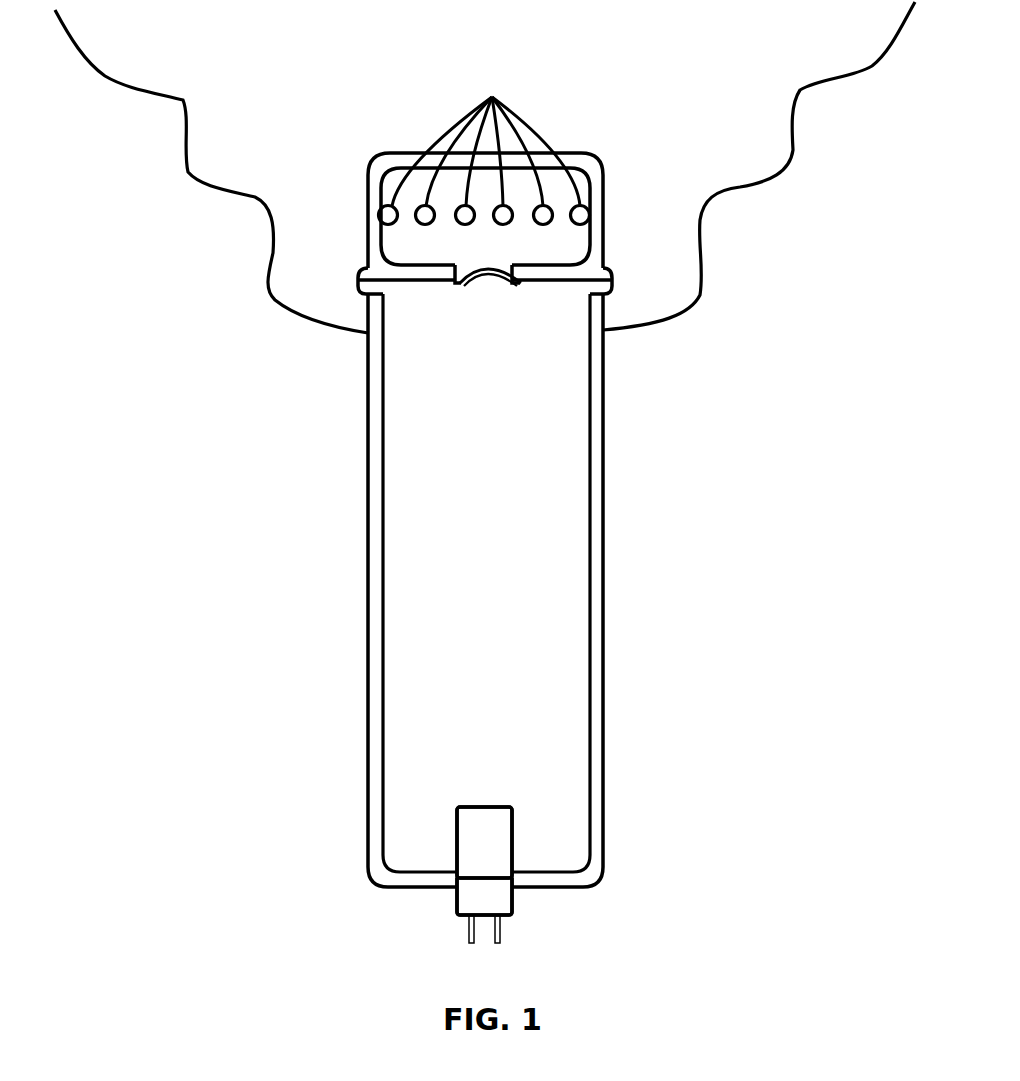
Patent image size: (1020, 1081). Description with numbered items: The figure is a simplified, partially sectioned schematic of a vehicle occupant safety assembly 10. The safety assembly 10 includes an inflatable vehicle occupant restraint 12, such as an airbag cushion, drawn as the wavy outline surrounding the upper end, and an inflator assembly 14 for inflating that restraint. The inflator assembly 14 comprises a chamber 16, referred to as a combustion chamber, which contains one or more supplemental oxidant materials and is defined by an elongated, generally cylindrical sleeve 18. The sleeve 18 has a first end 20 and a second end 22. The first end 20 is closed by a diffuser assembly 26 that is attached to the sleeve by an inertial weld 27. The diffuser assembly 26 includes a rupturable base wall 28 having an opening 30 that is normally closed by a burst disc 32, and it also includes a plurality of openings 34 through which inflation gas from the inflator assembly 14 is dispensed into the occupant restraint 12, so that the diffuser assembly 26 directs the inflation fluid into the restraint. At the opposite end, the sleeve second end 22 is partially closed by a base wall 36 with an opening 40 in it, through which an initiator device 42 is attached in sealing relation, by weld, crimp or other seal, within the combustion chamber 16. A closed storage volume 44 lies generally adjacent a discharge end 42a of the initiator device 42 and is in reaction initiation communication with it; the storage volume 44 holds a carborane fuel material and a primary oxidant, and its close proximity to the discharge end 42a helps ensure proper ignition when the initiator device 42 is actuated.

The vehicle occupant safety assembly 10 is at (229, 545).
The inflatable vehicle occupant restraint 12 is at (183, 100).
The inflator assembly 14 is at (448, 615).
The chamber 16 is at (560, 583).
The sleeve 18 is at (596, 728).
The first end 20 is at (623, 307).
The second end 22 is at (366, 907).
The diffuser assembly 26 is at (624, 168).
The inertial weld 27 is at (343, 281).
The rupturable base wall 28 is at (552, 272).
The opening 30 is at (442, 274).
The burst disc 32 is at (477, 278).
The openings 34 is at (486, 136).
The base wall 36 is at (552, 877).
The opening 40 is at (457, 880).
The initiator device 42 is at (470, 880).
The discharge end 42a is at (485, 876).
The closed storage volume 44 is at (490, 830).